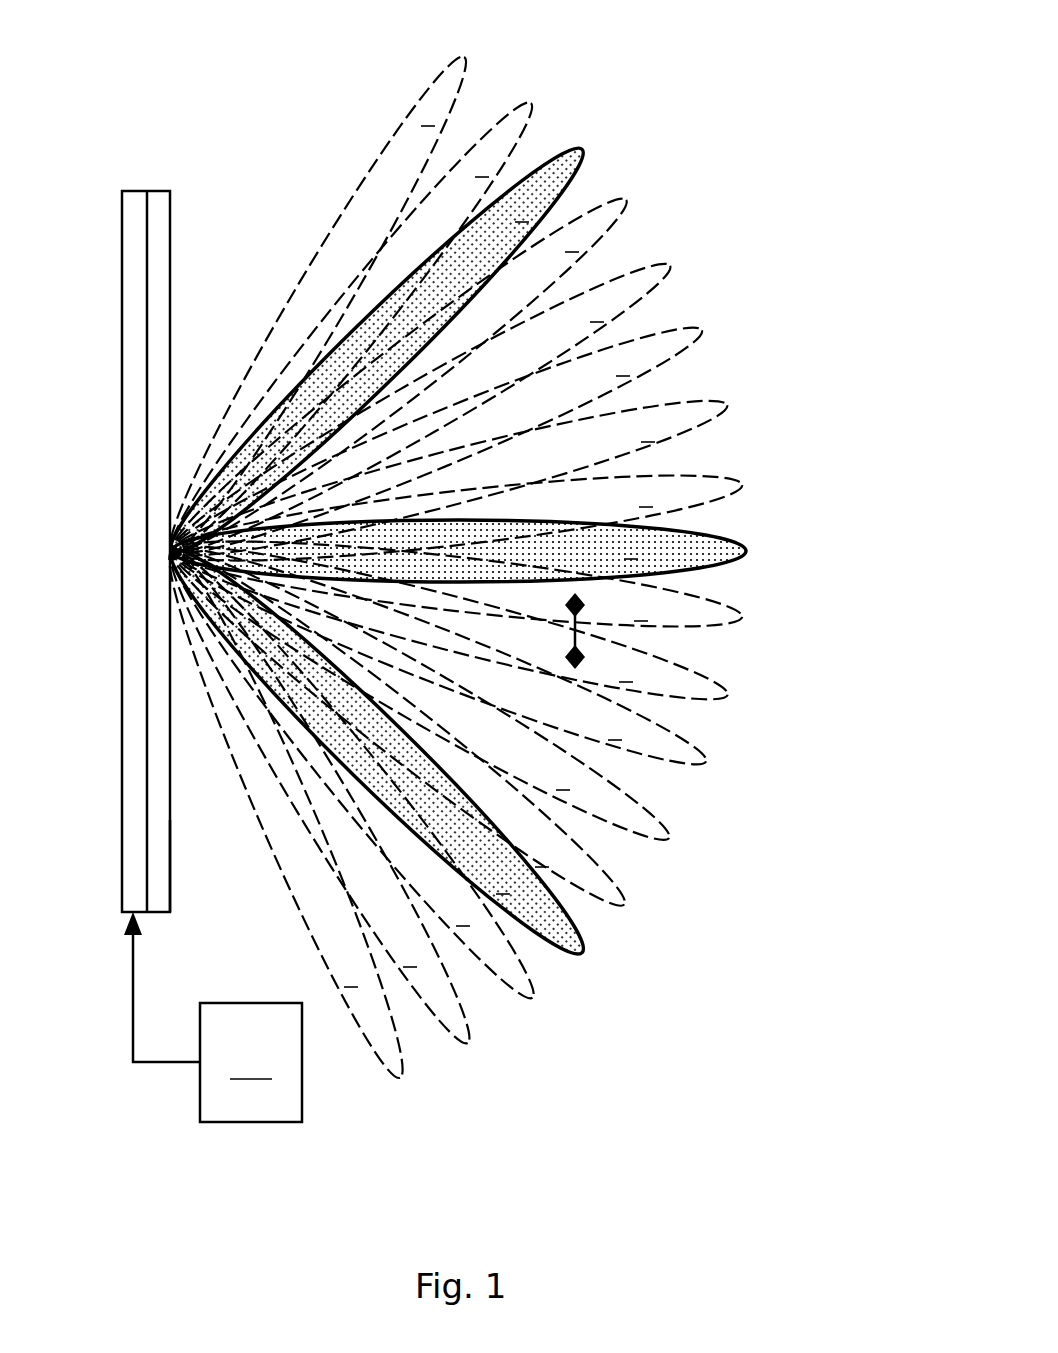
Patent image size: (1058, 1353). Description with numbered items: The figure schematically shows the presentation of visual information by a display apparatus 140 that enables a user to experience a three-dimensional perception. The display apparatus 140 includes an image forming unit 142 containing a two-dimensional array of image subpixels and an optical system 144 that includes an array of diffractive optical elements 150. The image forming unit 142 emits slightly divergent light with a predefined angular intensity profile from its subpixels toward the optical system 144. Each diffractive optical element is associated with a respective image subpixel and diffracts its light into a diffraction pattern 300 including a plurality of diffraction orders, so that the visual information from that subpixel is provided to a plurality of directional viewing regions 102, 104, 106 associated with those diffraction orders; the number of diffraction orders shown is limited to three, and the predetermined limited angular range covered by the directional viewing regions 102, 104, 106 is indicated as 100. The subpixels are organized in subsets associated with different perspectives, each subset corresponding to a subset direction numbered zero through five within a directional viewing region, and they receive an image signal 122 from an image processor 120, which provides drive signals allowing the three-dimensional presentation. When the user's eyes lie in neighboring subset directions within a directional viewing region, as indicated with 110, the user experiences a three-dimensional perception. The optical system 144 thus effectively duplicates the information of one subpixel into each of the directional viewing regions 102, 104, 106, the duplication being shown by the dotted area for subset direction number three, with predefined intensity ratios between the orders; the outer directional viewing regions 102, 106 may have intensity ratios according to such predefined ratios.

The predetermined limited angular range 100 is at (294, 208).
The directional viewing region 102 is at (440, 843).
The directional viewing region 104 is at (763, 375).
The directional viewing region 106 is at (538, 0).
The user's eyes in neighboring subset directions 110 is at (580, 617).
The image processor 120 is at (251, 1062).
The image signal 122 is at (155, 1073).
The display apparatus 140 is at (163, 525).
The image forming unit 142 is at (135, 780).
The optical system 144 is at (165, 873).
The array of diffractive optical elements 150 is at (163, 838).
The diffraction pattern 300 is at (383, 784).